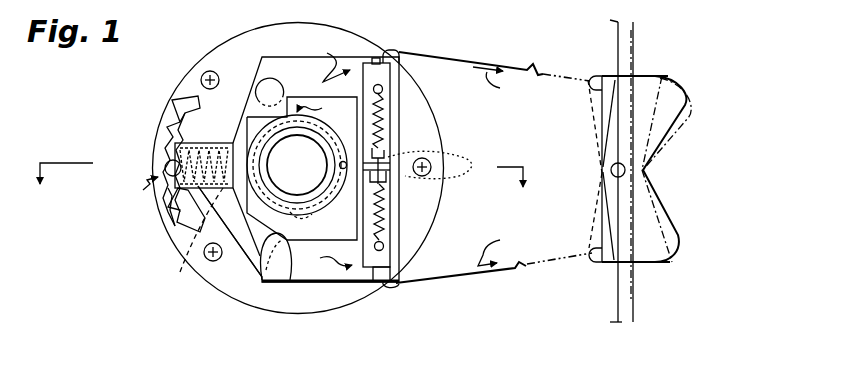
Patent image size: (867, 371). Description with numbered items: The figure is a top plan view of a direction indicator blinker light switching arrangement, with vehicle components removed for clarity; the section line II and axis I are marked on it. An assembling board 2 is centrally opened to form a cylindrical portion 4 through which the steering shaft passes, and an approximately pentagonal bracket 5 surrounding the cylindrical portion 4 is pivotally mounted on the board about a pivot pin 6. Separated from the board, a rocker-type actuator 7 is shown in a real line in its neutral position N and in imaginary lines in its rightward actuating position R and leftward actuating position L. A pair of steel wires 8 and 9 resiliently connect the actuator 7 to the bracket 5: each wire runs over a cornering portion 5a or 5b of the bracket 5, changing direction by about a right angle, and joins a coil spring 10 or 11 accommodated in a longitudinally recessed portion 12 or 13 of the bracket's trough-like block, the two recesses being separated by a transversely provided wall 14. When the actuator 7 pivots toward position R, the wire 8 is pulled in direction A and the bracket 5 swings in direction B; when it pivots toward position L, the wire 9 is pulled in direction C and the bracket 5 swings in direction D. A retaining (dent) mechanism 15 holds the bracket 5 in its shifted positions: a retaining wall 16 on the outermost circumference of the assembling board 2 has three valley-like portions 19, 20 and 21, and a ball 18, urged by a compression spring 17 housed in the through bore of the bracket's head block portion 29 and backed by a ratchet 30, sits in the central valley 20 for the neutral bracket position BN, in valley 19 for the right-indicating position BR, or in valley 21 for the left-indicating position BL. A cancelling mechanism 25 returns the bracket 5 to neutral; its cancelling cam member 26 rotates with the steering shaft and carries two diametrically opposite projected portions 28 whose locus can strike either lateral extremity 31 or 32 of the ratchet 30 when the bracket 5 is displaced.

The assembling board 2 is at (441, 133).
The cylindrical portion 4 is at (331, 177).
The bracket 5 is at (340, 57).
The cornering portion 5a is at (385, 52).
The cornering portion 5b is at (387, 285).
The pivot pin 6 is at (443, 167).
The actuator 7 is at (648, 190).
The steel wire 8 is at (463, 58).
The steel wire 9 is at (458, 282).
The coil spring 10 is at (383, 109).
The coil spring 11 is at (385, 203).
The longitudinally recessed portion 12 is at (380, 85).
The longitudinally recessed portion 13 is at (384, 246).
The transversely provided wall 14 is at (392, 175).
The retaining (dent) mechanism 15 is at (137, 193).
The retaining wall 16 is at (167, 123).
The spring 17 is at (193, 245).
The ball 18 is at (168, 160).
The valley-like portion 19 is at (173, 126).
The valley-like portion 20 is at (171, 189).
The valley-like portion 21 is at (192, 210).
The cancelling mechanism 25 is at (328, 110).
The cancelling cam member 26 is at (311, 221).
The projected portion 28 is at (283, 118).
The head block portion 29 is at (212, 145).
The ratchet 30 is at (240, 249).
The lateral extremity 31 is at (282, 256).
The lateral extremity 32 is at (283, 105).
The pulling direction of wire 8 A is at (495, 90).
The pivotal direction of bracket B is at (331, 55).
The pulling direction of wire 9 C is at (498, 244).
The pivotal direction of bracket D is at (325, 266).
The right-indicating bracket position BR is at (157, 128).
The neutral bracket position BN is at (157, 165).
The left-indicating bracket position BL is at (157, 207).
The leftward actuating position L is at (670, 233).
The neutral position N is at (667, 262).
The rightward actuating position R is at (648, 268).
The axis I is at (632, 310).
The section line II is at (284, 195).